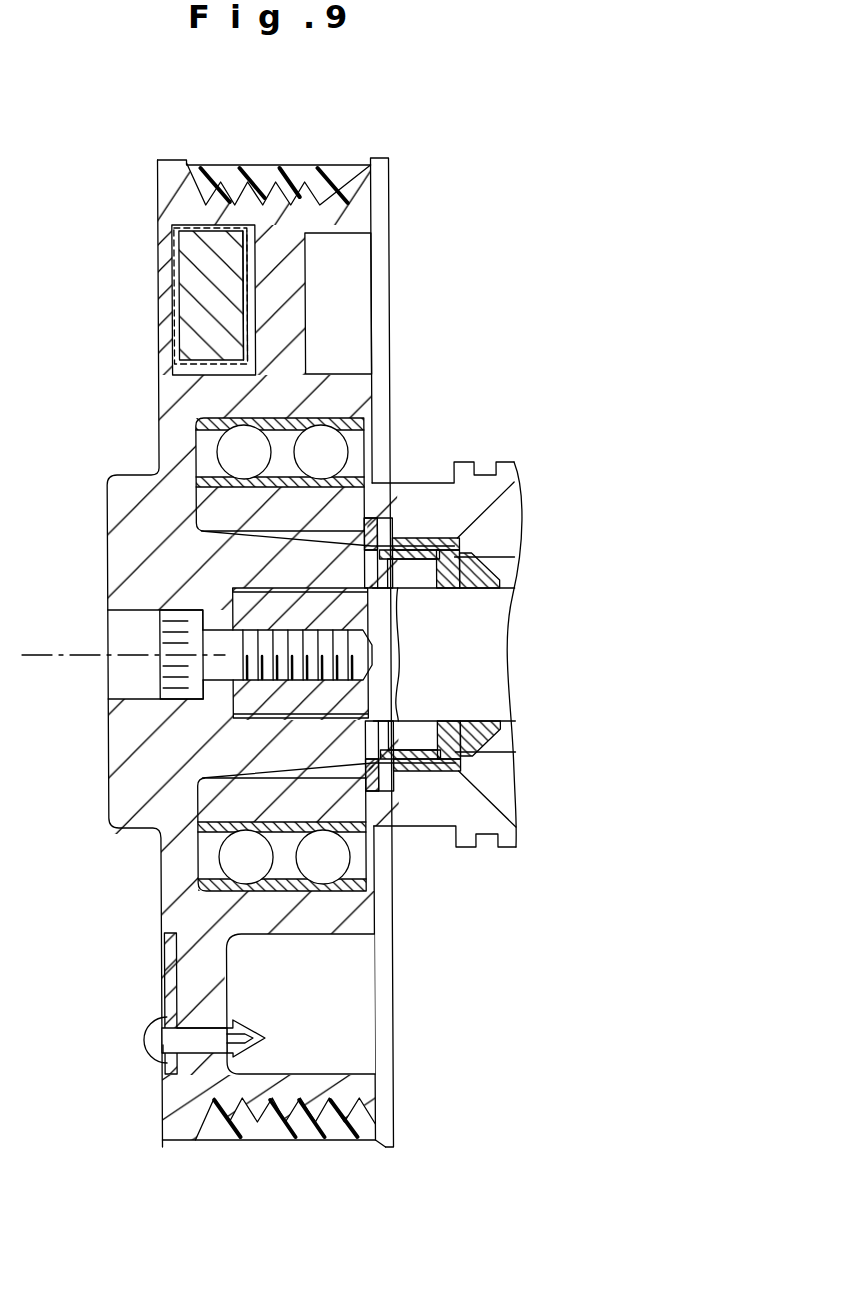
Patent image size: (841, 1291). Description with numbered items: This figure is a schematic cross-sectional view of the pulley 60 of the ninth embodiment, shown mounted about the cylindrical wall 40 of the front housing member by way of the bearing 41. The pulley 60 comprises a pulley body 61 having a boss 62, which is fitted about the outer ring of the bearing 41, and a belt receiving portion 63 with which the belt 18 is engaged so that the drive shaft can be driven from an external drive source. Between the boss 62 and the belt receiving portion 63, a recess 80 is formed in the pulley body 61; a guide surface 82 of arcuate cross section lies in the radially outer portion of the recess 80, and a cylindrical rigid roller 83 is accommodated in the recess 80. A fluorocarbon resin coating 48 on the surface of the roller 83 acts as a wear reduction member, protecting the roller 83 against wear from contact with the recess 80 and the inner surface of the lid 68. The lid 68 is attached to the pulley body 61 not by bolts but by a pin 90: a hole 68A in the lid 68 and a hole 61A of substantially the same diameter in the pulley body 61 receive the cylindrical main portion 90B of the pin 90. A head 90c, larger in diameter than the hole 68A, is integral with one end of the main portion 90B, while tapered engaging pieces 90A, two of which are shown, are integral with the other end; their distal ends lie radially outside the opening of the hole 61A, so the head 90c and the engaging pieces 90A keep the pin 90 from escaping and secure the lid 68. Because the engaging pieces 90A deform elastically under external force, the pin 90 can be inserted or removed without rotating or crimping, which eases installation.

The belt 18 is at (305, 1142).
The cylindrical wall 40 is at (352, 505).
The bearing 41 is at (338, 452).
The fluorocarbon resin coating 48 is at (180, 340).
The pulley 60 is at (407, 264).
The pulley body 61 is at (393, 320).
The hole 61A is at (230, 1028).
The boss 62 is at (343, 388).
The belt receiving portion 63 is at (168, 190).
The lid 68 is at (163, 985).
The hole 68A is at (146, 1028).
The recess 80 is at (242, 327).
The guide surface 82 is at (190, 242).
The roller 83 is at (188, 288).
The pin 90 is at (145, 1042).
The engaging pieces 90A is at (266, 1035).
The main portion 90B is at (190, 1045).
The head 90c is at (150, 1060).